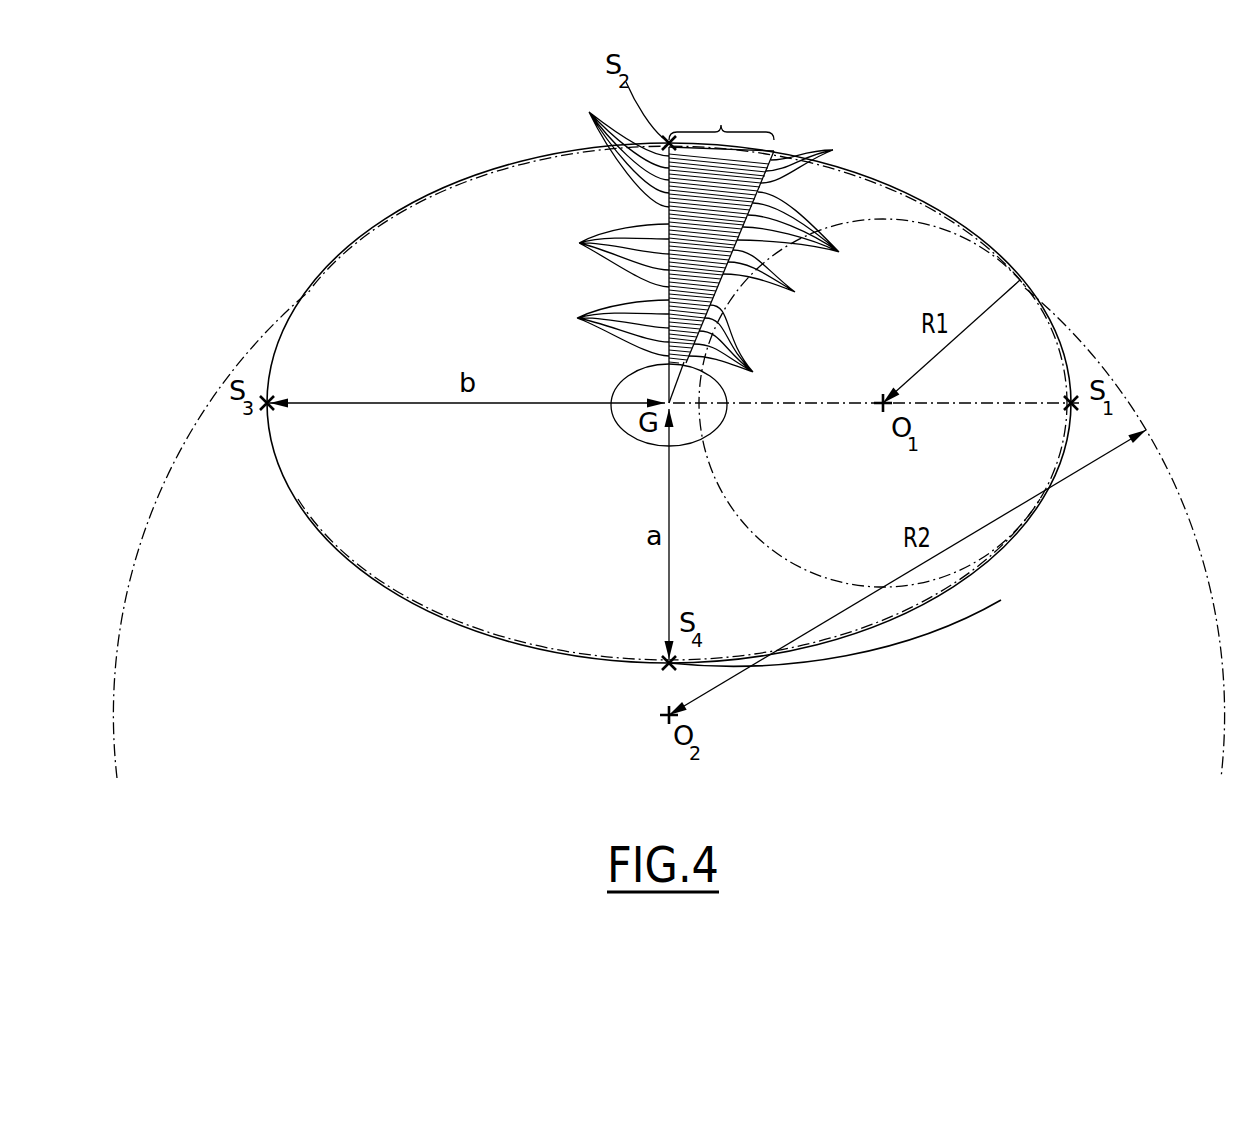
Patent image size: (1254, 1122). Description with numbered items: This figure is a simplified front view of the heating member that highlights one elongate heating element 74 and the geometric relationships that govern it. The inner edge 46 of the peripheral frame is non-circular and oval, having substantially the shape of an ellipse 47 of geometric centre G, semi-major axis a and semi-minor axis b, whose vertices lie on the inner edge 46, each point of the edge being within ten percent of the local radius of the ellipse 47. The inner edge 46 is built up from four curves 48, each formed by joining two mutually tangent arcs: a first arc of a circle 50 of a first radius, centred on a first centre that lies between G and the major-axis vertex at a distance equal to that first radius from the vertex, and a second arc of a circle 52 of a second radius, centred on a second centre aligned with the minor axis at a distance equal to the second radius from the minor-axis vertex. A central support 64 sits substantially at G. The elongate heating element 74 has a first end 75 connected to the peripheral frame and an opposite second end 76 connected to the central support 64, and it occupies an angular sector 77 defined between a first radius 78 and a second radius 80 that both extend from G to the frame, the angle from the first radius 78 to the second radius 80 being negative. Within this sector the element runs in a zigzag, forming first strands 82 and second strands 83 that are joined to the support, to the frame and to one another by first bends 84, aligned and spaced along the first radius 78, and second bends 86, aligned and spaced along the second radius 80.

The inner edge 46 is at (284, 509).
The ellipse 47 is at (966, 600).
The curves 48 is at (445, 190).
The first arc of a circle 50 is at (1036, 300).
The second arc of a circle 52 is at (668, 449).
The central support 64 is at (616, 424).
The elongate heating element 74 is at (707, 259).
The first end 75 is at (773, 151).
The second end 76 is at (683, 362).
The angular sector 77 is at (721, 116).
The first radius 78 is at (658, 212).
The second radius 80 is at (790, 180).
The first strands 82 is at (697, 172).
The second strands 83 is at (722, 180).
The first bends 84 is at (609, 224).
The second bends 86 is at (778, 261).